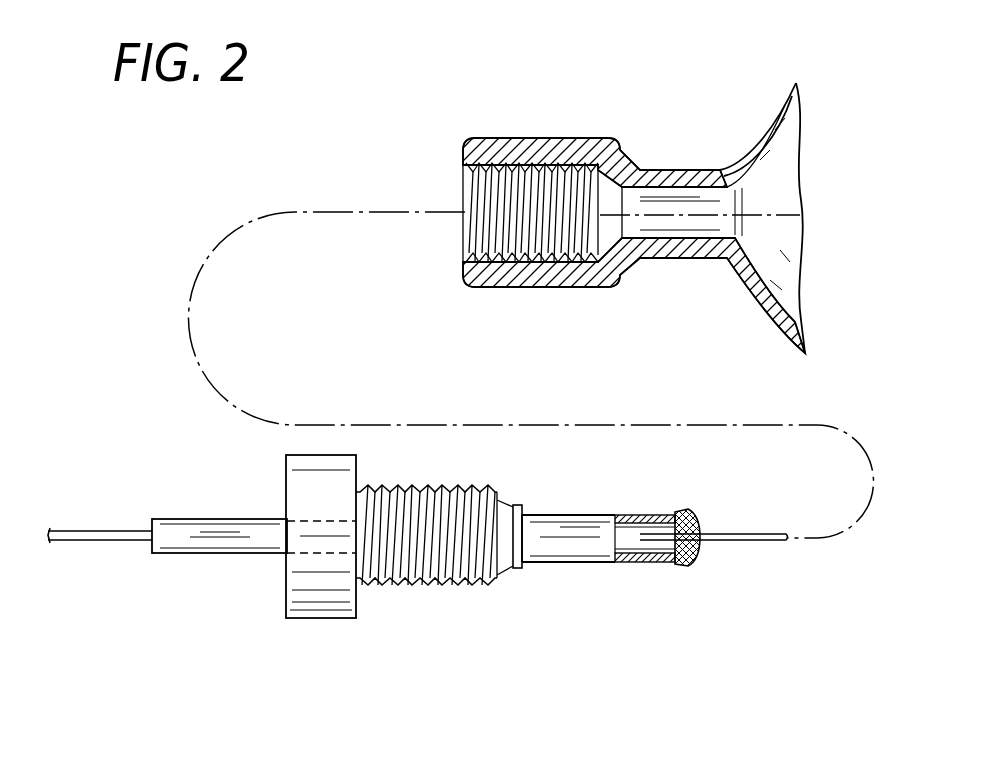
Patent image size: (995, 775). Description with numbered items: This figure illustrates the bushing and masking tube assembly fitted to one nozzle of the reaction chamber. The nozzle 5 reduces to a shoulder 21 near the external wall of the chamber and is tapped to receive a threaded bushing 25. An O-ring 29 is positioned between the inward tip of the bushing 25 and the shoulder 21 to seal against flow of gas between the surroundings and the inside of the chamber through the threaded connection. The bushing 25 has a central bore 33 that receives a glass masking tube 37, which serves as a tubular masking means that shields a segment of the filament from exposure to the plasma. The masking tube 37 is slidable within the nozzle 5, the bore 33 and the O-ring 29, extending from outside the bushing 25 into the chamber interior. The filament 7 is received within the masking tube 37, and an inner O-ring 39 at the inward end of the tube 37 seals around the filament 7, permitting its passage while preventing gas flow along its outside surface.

The nozzle 5 is at (540, 137).
The filament 7 is at (104, 530).
The shoulder 21 is at (620, 270).
The bushing 25 is at (325, 619).
The O-ring 29 is at (520, 505).
The central bore 33 is at (286, 520).
The glass masking tube 37 is at (207, 554).
The inner O-ring 39 is at (705, 528).